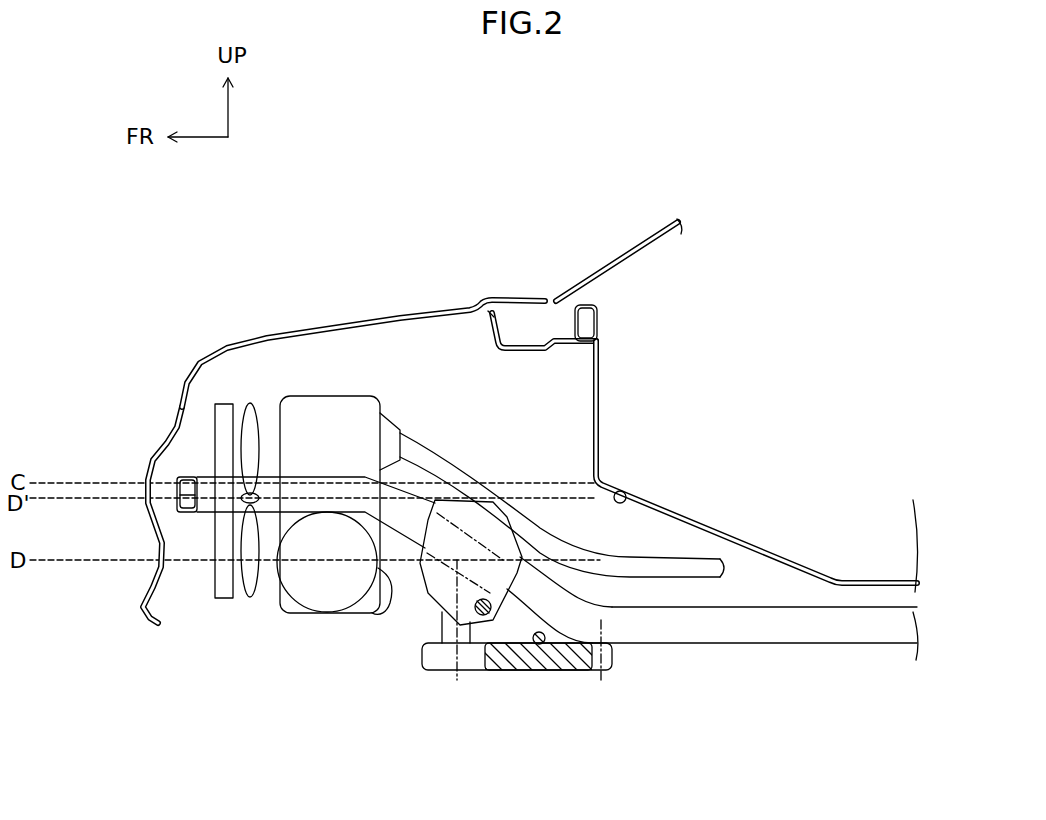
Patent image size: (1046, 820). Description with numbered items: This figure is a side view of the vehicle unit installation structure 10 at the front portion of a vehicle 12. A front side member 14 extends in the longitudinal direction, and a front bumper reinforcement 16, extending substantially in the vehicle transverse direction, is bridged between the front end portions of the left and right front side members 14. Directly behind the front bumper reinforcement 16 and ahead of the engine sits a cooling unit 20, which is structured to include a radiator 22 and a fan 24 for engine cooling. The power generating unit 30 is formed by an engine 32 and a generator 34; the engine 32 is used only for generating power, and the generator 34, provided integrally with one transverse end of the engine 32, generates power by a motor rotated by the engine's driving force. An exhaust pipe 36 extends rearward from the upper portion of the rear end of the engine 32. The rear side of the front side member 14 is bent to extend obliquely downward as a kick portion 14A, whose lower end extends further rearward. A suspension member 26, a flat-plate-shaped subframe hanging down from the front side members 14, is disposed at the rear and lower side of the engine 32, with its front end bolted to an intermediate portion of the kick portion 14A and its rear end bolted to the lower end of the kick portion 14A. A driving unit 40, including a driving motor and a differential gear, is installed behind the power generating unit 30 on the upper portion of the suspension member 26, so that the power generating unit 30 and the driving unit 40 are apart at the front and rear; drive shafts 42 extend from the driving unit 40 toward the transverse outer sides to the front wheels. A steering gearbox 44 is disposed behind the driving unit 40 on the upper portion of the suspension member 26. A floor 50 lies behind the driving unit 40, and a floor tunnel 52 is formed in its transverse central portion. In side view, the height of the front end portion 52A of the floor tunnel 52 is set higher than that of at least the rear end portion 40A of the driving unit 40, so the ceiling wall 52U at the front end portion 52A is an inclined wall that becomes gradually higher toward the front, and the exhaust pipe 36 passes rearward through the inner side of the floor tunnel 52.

The vehicle unit installation structure 10 is at (402, 626).
The vehicle 12 is at (461, 308).
The front side member 14 is at (270, 476).
The kick portion 14A is at (400, 537).
The front bumper reinforcement 16 is at (162, 480).
The cooling unit 20 is at (238, 391).
The radiator 22 is at (228, 599).
The fan 24 is at (253, 598).
The suspension member 26 is at (562, 672).
The power generating unit 30 is at (321, 393).
The engine 32 is at (353, 417).
The generator 34 is at (328, 594).
The exhaust pipe 36 is at (674, 556).
The driving unit 40 is at (439, 493).
The rear end portion of the driving unit 40A is at (530, 580).
The drive shaft 42 is at (512, 515).
The steering gearbox 44 is at (523, 645).
The floor 50 is at (864, 576).
The floor tunnel 52 is at (772, 546).
The front end portion of the floor tunnel 52A is at (622, 491).
The ceiling wall 52U is at (673, 503).